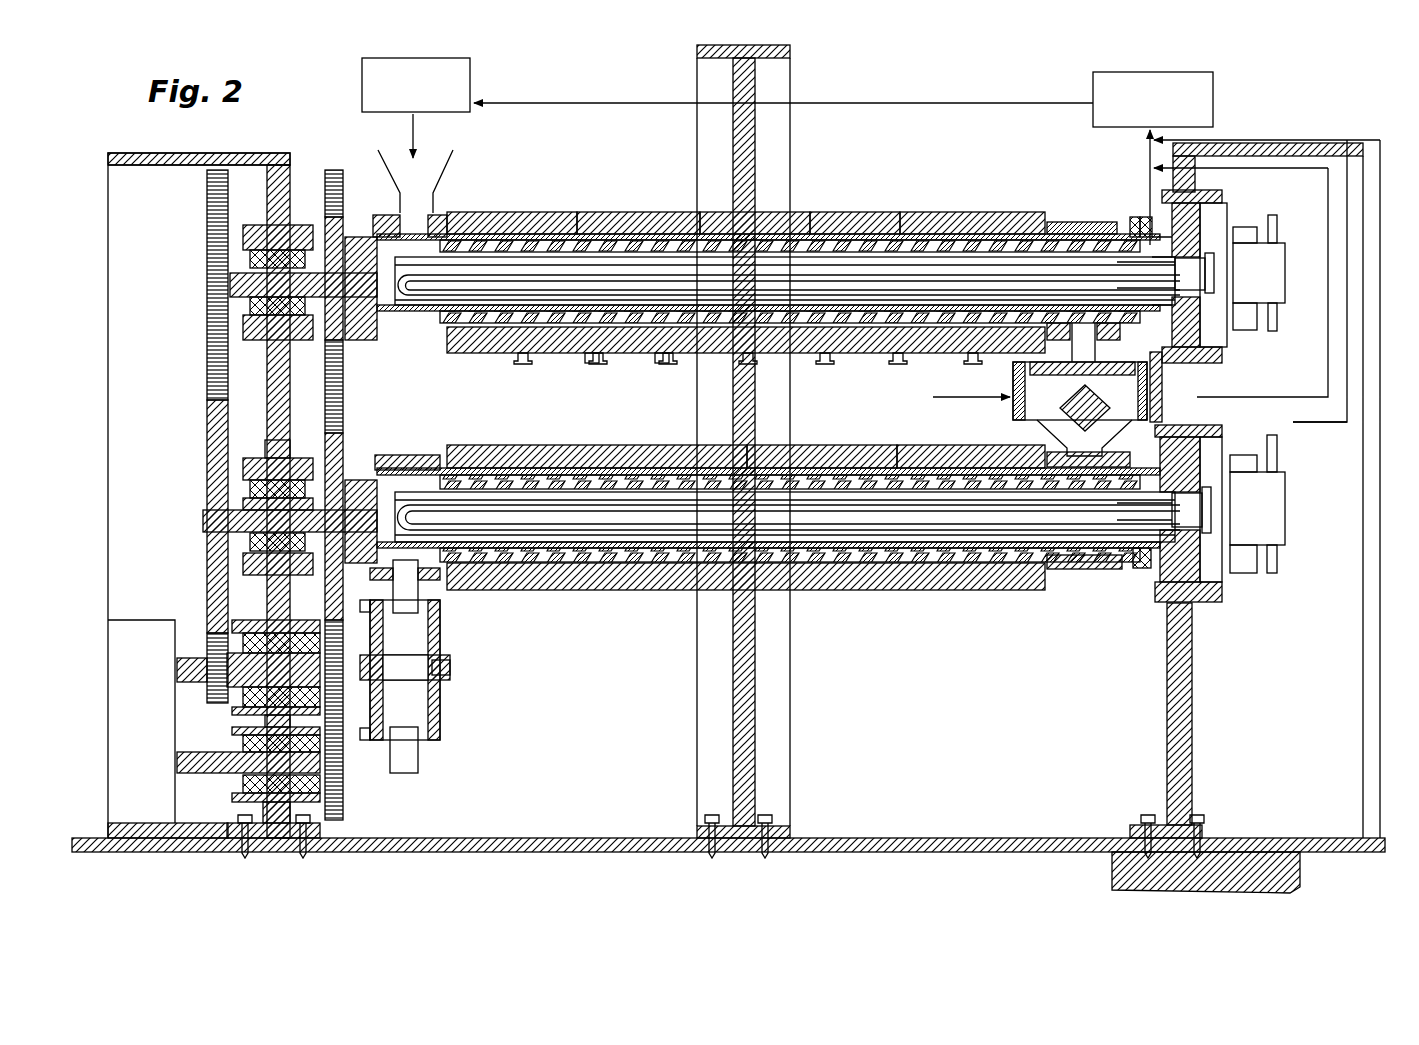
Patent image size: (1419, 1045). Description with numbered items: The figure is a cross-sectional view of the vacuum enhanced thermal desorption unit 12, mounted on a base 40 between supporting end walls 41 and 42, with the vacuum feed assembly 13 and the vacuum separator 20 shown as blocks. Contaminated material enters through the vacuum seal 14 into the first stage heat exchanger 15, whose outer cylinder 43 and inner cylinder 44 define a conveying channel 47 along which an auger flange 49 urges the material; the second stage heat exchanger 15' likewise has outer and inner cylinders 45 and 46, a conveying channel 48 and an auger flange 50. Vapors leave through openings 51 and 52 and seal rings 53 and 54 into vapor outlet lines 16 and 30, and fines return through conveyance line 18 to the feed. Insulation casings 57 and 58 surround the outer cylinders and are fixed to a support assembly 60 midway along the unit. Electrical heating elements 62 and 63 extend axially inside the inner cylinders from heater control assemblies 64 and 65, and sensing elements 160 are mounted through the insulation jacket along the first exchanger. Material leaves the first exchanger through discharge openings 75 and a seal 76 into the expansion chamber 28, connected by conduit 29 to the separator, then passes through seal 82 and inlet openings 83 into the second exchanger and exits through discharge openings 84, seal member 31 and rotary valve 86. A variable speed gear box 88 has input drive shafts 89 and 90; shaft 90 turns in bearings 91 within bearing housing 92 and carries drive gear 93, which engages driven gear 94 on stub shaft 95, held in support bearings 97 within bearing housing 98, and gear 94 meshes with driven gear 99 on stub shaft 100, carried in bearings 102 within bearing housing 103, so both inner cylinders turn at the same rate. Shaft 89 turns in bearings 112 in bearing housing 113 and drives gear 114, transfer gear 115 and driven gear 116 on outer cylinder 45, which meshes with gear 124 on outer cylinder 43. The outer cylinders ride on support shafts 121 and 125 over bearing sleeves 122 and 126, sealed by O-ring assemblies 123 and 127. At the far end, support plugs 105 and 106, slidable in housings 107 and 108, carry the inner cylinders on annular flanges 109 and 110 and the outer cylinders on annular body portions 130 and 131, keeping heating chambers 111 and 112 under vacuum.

The vacuum enhanced thermal desorption unit 12 is at (592, 180).
The vacuum feed assembly 13 is at (472, 92).
The vacuum seal 14 is at (433, 208).
The first stage heat exchanger 15 is at (746, 363).
The second stage heat exchanger 15' is at (746, 594).
The vapor discharge line 16 is at (1148, 170).
The conveyance line 18 is at (928, 103).
The vacuum separator 20 is at (1093, 88).
The expansion chamber 28 is at (1010, 372).
The conduit 29 is at (1328, 262).
The vapor outlet line 30 is at (1347, 338).
The seal member 31 is at (446, 630).
The base 40 is at (560, 836).
The supporting end wall 41 is at (294, 180).
The supporting end wall 42 is at (1195, 780).
The outer cylinder 43 is at (583, 225).
The inner cylinder 44 is at (624, 228).
The outer cylinder 45 is at (573, 462).
The inner cylinder 46 is at (830, 462).
The conveying channel 47 is at (503, 225).
The conveying channel 48 is at (618, 590).
The auger flange 49 is at (945, 225).
The auger flange 50 is at (955, 590).
The openings 51 is at (1140, 230).
The openings 52 is at (1089, 446).
The seal ring 53 is at (1080, 409).
The seal ring 54 is at (1150, 572).
The insulation casing 57 is at (684, 225).
The insulation casing 58 is at (884, 458).
The support assembly 60 is at (758, 787).
The electrical heating element 62 is at (855, 262).
The electrical heating element 63 is at (660, 495).
The heater control assembly 64 is at (1201, 273).
The heater control assembly 65 is at (1201, 504).
The discharge openings 75 is at (1069, 343).
The seal 76 is at (1068, 222).
The seal 82 is at (1096, 569).
The inlet openings 83 is at (1070, 569).
The discharge openings 84 is at (395, 580).
The rotary valve 86 is at (450, 670).
The variable speed gear box 88 is at (168, 729).
The input drive shaft 89 is at (177, 760).
The input drive shaft 90 is at (190, 660).
The bearings 91 is at (227, 694).
The bearing housing 92 is at (230, 710).
The drive gear 93 is at (177, 672).
The driven gear 94 is at (207, 585).
The stub shaft 95 is at (203, 523).
The support bearings 97 is at (243, 548).
The bearing housing 98 is at (243, 470).
The driven gear 99 is at (207, 195).
The stub shaft 100 is at (232, 285).
The bearings 102 is at (243, 310).
The bearing housing 103 is at (255, 340).
The support plug 105 is at (1222, 222).
The support plug 106 is at (1222, 575).
The housing 107 is at (1222, 360).
The housing 108 is at (1200, 603).
The inner annular flange 109 is at (1129, 372).
The inner annular flange 110 is at (1082, 569).
The heating chamber 111 is at (640, 345).
The heating chamber 112 is at (662, 590).
The bearing housing 113 is at (243, 778).
The driven gear 114 is at (345, 790).
The transfer gear 115 is at (343, 700).
The driven gear 116 is at (345, 418).
The cylindrical support shaft 121 is at (243, 490).
The bearing sleeve 122 is at (243, 502).
The O-ring assembly 123 is at (277, 458).
The driven gear 124 is at (345, 372).
The cylindrical support shaft 125 is at (346, 240).
The bearing sleeve 126 is at (243, 258).
The O-ring assembly 127 is at (268, 228).
The annular body portion 130 is at (1135, 217).
The annular body portion 131 is at (1222, 432).
The sensing elements 160 is at (592, 358).